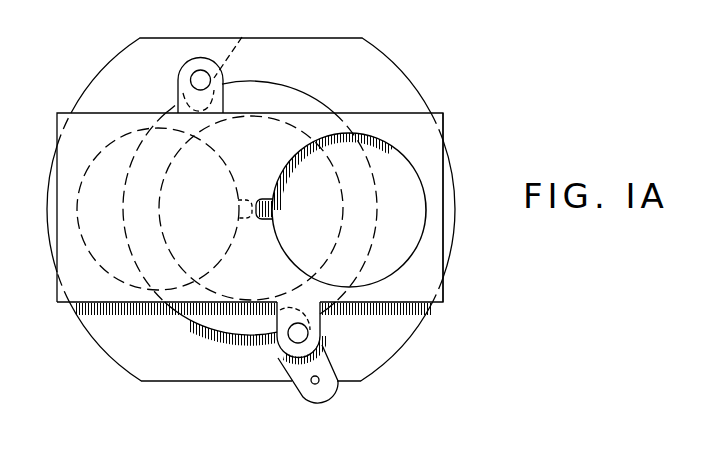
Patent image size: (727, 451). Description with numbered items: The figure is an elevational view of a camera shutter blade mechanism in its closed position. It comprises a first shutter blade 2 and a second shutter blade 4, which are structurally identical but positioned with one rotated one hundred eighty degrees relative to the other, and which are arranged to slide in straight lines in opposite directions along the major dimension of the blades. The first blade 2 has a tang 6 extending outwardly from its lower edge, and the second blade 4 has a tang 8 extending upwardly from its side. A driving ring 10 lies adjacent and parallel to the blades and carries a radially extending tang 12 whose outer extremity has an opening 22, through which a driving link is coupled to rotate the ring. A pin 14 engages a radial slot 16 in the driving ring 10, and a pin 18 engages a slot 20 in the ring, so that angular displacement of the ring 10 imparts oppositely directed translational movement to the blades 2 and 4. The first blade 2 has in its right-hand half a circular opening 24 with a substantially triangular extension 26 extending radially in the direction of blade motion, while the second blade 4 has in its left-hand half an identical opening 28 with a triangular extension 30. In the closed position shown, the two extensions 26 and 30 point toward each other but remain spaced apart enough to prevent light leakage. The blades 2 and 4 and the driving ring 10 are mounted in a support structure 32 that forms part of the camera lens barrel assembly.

The first shutter blade 2 is at (75, 137).
The second shutter blade 4 is at (415, 130).
The tang 6 is at (322, 329).
The tang 8 is at (186, 62).
The driving ring 10 is at (224, 330).
The tang 12 is at (338, 392).
The pin 14 is at (280, 356).
The radial slot 16 is at (281, 311).
The pin 18 is at (198, 80).
The slot 20 is at (242, 37).
The opening 22 is at (315, 384).
The circular opening 24 is at (416, 212).
The triangular extension 26 is at (268, 207).
The opening 28 is at (226, 164).
The triangular extension 30 is at (238, 208).
The support structure 32 is at (335, 38).